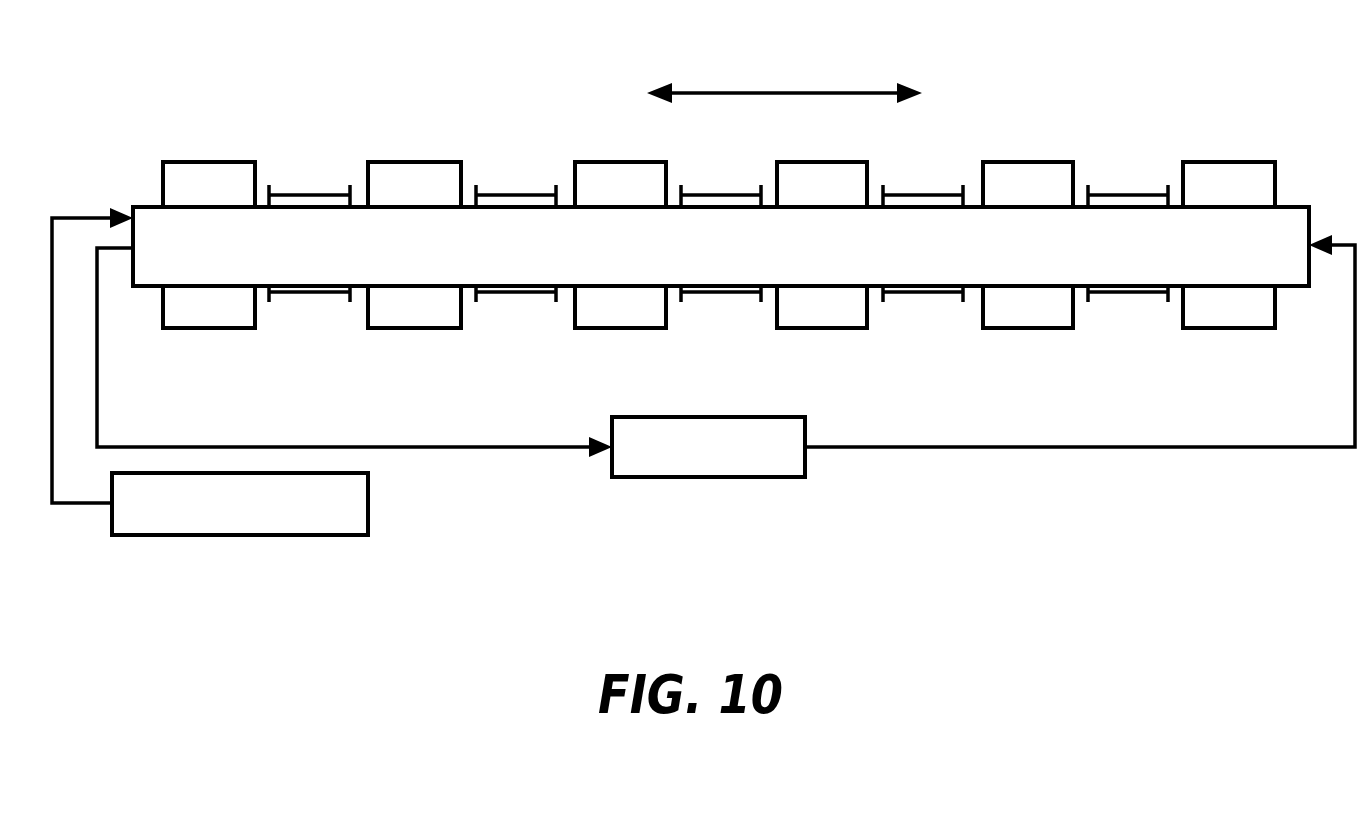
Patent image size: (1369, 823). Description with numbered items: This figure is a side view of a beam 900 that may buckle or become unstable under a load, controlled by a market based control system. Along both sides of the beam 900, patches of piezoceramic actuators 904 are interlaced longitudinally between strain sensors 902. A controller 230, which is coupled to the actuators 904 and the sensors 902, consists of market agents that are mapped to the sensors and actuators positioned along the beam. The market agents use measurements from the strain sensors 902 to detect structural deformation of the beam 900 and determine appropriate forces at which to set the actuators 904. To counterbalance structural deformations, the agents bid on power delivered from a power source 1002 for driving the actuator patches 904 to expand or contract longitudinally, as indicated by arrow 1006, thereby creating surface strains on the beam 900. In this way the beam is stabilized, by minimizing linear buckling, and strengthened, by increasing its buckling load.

The beam 900 is at (1293, 206).
The sensors 902 is at (207, 162).
The actuators 904 is at (312, 190).
The arrow 1006 is at (770, 91).
The power source 1002 is at (368, 506).
The controller 230 is at (703, 479).